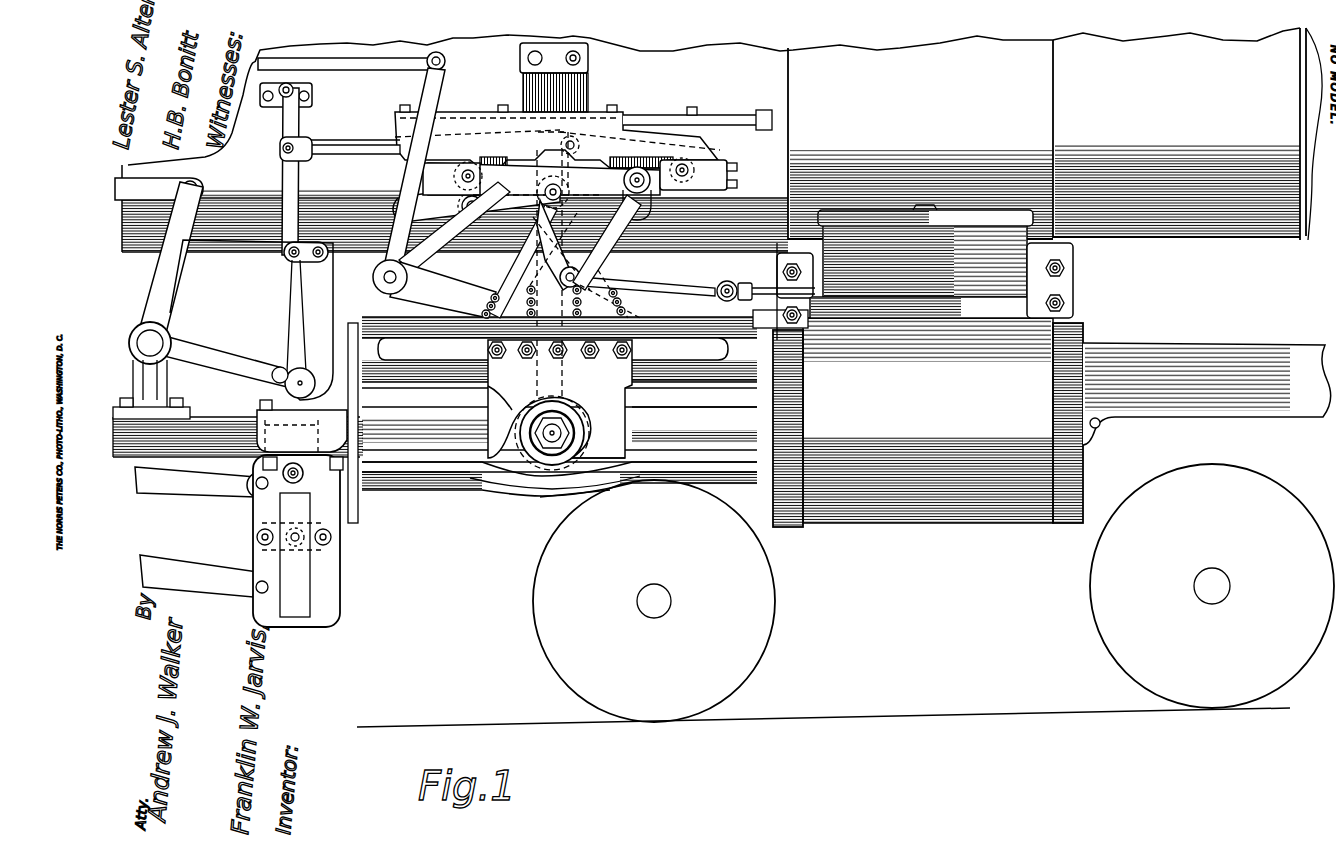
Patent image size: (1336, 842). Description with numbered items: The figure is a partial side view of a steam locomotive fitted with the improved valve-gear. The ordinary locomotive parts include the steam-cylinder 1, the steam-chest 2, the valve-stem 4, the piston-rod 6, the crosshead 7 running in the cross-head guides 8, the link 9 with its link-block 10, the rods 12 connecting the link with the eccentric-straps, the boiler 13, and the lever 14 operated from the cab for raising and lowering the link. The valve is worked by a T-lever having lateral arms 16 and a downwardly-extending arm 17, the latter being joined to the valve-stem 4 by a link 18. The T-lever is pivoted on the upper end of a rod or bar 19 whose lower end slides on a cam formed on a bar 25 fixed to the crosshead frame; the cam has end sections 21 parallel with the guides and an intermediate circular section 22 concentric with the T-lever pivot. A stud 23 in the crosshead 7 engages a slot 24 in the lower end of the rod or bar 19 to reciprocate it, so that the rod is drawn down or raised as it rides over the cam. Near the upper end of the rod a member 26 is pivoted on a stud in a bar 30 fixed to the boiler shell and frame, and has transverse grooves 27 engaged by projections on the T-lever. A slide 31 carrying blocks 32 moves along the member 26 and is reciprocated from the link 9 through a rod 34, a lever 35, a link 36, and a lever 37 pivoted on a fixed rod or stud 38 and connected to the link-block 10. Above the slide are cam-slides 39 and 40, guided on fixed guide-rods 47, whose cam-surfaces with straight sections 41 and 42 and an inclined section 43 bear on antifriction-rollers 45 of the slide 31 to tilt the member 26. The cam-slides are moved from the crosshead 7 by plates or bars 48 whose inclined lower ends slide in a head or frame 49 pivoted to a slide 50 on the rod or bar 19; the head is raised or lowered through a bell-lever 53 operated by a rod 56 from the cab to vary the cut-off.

The steam-cylinder 1 is at (928, 422).
The steam-chest 2 is at (913, 272).
The valve-stem 4 is at (760, 285).
The piston-rod 6 is at (686, 420).
The crosshead 7 is at (598, 421).
The cross-head guides 8 is at (553, 347).
The link 9 is at (318, 580).
The link-block 10 is at (285, 480).
The rods 12 is at (204, 532).
The boiler 13 is at (722, 140).
The lever 14 is at (228, 350).
The lateral arms 16 is at (526, 192).
The downwardly-extending arm 17 is at (558, 231).
The link 18 is at (679, 285).
The rod or bar 19 is at (528, 383).
The end sections 21 is at (559, 471).
The intermediate circular section 22 is at (515, 482).
The stud 23 is at (565, 436).
The slot 24 is at (560, 412).
The bar 25 is at (572, 488).
The member 26 is at (652, 200).
The transverse grooves 27 is at (640, 225).
The bar 30 is at (590, 90).
The slide 31 is at (705, 158).
The blocks 32 is at (710, 174).
The rod 34 is at (358, 148).
The lever 35 is at (286, 181).
The link 36 is at (300, 262).
The lever 37 is at (303, 316).
The fixed rod or stud 38 is at (285, 386).
The cam-slide 39 is at (645, 140).
The cam-slide 40 is at (557, 133).
The straight section 41 is at (460, 150).
The straight section 42 is at (576, 162).
The inclined section 43 is at (413, 172).
The antifriction-rollers 45 is at (467, 248).
The guide-rods 47 is at (736, 115).
The plates or bars 48 is at (515, 267).
The head or frame 49 is at (622, 306).
The slide 50 is at (554, 301).
The bell-lever 53 is at (434, 289).
The rod 56 is at (346, 68).